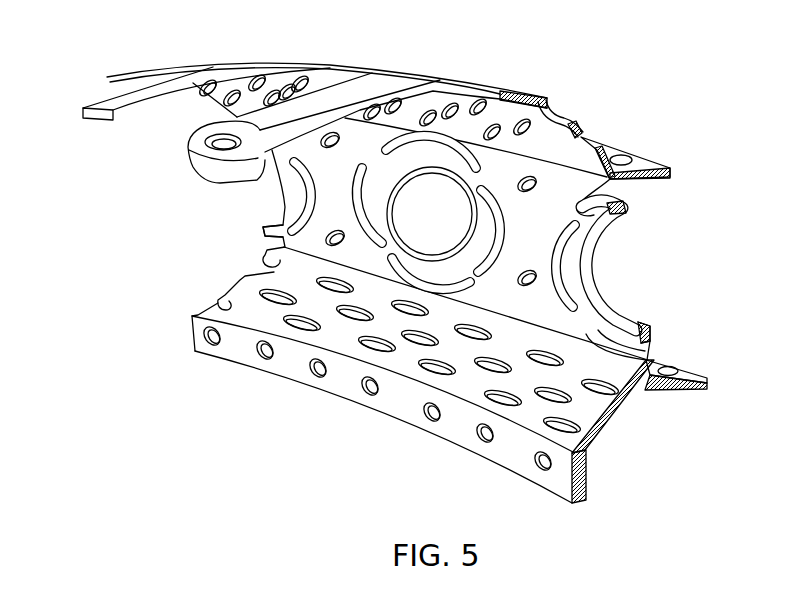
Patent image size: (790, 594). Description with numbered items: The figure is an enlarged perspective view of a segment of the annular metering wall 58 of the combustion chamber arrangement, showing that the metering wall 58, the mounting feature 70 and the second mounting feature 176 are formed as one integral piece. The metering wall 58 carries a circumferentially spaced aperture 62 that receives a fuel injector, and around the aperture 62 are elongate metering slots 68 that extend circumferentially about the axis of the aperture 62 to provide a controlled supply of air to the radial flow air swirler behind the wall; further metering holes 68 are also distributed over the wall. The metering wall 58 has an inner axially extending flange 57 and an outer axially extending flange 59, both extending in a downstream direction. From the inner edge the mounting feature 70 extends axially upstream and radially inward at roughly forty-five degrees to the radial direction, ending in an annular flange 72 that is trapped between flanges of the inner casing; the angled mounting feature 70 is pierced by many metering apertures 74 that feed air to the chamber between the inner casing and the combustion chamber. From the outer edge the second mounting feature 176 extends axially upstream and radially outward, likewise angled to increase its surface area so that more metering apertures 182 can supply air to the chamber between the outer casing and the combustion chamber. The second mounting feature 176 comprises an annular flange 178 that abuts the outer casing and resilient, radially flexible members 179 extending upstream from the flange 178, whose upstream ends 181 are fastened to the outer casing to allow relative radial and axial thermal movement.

The inner axially extending flange 57 is at (697, 390).
The metering wall 58 is at (348, 184).
The outer axially extending flange 59 is at (664, 160).
The apertures 62 is at (282, 240).
The metering holes 68 is at (612, 330).
The mounting feature 70 is at (600, 447).
The annular flange 72 is at (569, 483).
The metering apertures 74 is at (433, 410).
The second mounting feature 176 is at (577, 127).
The annular flange 178 is at (454, 78).
The circumferentially spaced members 179 is at (108, 105).
The upstream ends 181 is at (197, 163).
The metering apertures 182 is at (523, 117).